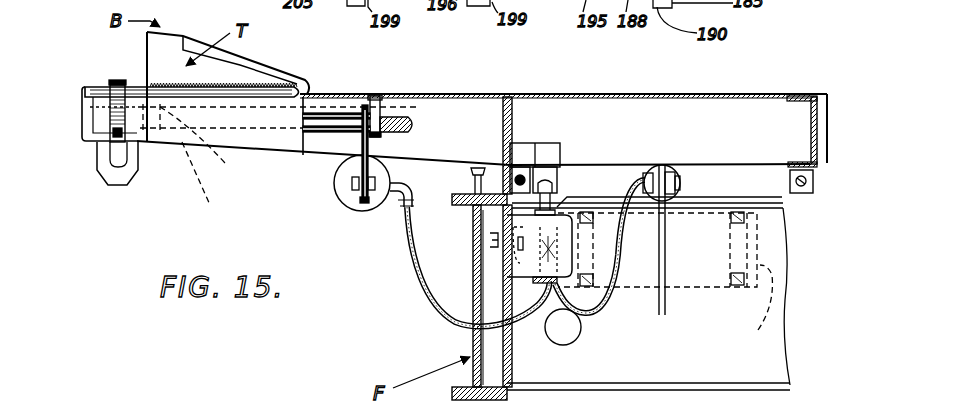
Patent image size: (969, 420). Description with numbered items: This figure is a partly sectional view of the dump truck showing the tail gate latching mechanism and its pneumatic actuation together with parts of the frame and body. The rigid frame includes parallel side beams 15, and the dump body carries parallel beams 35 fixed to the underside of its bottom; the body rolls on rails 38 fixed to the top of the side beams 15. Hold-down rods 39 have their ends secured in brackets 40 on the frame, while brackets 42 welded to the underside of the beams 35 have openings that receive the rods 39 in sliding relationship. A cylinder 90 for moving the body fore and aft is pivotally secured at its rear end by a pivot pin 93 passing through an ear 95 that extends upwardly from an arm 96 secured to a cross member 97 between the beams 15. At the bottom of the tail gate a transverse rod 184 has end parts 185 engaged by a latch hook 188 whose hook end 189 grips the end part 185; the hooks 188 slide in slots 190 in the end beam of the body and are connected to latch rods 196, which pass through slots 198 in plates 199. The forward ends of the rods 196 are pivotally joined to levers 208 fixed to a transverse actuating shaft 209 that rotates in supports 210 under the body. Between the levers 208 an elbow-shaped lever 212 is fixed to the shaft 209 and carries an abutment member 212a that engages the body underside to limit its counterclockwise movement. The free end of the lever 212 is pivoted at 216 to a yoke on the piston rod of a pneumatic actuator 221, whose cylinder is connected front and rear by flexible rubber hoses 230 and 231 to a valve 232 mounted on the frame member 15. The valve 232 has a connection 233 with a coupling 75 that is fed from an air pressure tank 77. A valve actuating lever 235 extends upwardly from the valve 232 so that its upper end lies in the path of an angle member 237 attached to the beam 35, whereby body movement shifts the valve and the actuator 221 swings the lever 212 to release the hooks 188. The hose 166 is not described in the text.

The side beams 15 is at (473, 343).
The parallel beams 35 is at (502, 107).
The rails 38 is at (470, 179).
The rods 39 is at (521, 176).
The brackets 40 is at (477, 220).
The brackets 42 is at (511, 177).
The coupling 75 is at (467, 234).
The tank 77 is at (665, 281).
The cylinder 90 is at (681, 170).
The pivot pin 93 is at (682, 183).
The ear 95 is at (662, 165).
The arm 96 is at (665, 300).
The cross member 97 is at (603, 370).
The hose 166 is at (603, 313).
The transverse rod 184 is at (262, 91).
The end parts 185 is at (103, 85).
The latch hook 188 is at (110, 107).
The hook end 189 is at (115, 80).
The slots 190 is at (110, 117).
The latch rods 196 is at (140, 161).
The slots 198 is at (110, 167).
The plates 199 is at (115, 183).
The levers 208 is at (209, 144).
The transverse actuating shaft 209 is at (396, 128).
The supports 210 is at (413, 77).
The elbow-shaped lever 212 is at (351, 144).
The abutment member 212a is at (363, 193).
The pivot 216 is at (390, 205).
The pneumatic actuator 221 is at (333, 201).
The rubber hose 230 is at (427, 302).
The rubber hose 231 is at (377, 343).
The valve 232 is at (563, 257).
The connection 233 is at (550, 313).
The valve actuating lever 235 is at (555, 197).
The angle member 237 is at (553, 163).